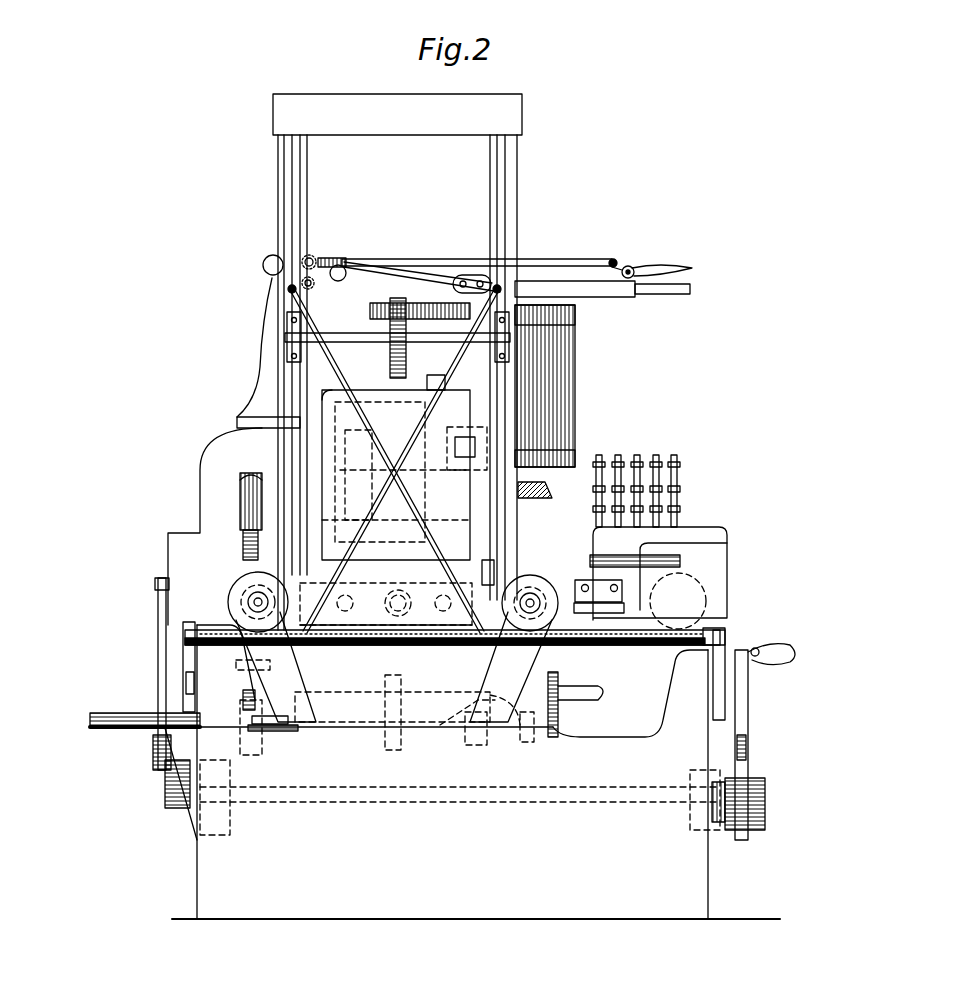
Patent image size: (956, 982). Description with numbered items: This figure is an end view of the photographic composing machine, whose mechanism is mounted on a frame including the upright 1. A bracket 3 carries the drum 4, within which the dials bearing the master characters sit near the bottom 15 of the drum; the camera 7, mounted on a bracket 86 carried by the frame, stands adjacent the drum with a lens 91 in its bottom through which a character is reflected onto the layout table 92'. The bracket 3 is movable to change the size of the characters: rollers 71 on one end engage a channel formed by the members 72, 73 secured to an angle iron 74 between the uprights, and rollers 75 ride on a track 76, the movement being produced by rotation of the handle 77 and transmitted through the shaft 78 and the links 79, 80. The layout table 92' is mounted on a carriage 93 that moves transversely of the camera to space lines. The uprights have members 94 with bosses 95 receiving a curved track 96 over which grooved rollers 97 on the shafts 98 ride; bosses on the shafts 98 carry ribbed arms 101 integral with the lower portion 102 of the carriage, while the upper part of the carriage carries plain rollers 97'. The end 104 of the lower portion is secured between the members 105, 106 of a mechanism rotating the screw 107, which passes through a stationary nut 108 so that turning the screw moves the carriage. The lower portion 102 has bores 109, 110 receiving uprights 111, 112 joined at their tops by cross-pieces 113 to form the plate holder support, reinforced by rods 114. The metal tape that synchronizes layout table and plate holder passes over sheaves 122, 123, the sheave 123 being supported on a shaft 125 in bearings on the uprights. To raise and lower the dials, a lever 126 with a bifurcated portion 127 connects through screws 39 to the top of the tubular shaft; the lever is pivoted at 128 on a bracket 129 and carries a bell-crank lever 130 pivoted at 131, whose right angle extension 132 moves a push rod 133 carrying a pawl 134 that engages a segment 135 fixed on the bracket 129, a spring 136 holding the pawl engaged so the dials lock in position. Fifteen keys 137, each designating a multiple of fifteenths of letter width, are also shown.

The upright 1 is at (446, 918).
The bracket 3 is at (200, 462).
The drum 4 is at (560, 377).
The camera 7 is at (411, 464).
The bottom of the drum 15 is at (578, 462).
The screws 39 is at (465, 278).
The rollers 71 is at (253, 659).
The channel member 72 is at (257, 690).
The channel member 73 is at (186, 690).
The angle iron 74 is at (202, 745).
The rollers 75 is at (252, 500).
The track 76 is at (246, 548).
The handle 77 is at (788, 662).
The shaft 78 is at (456, 803).
The link 79 is at (170, 770).
The link 80 is at (158, 690).
The bracket 86 is at (345, 388).
The lens 91 is at (477, 447).
The layout table 92' is at (510, 558).
The carriage 93 is at (386, 604).
The members 94 is at (190, 652).
The bosses 95 is at (726, 637).
The curved track 96 is at (632, 647).
The grooved or flanged rollers 97 is at (531, 590).
The plain rollers 97' is at (669, 578).
The shafts 98 is at (250, 594).
The ribbed arms 101 is at (305, 668).
The lower portion of the carriage 102 is at (416, 692).
The end of the lower portion of the carriage 104 is at (495, 745).
The member 105 is at (476, 748).
The member 106 is at (525, 746).
The screw 107 is at (106, 727).
The stationary nut 108 is at (250, 730).
The bore 109 is at (286, 732).
The bore 110 is at (470, 708).
The upright 111 is at (508, 214).
The upright 112 is at (283, 207).
The cross-pieces 113 is at (520, 120).
The rods or bars 114 is at (420, 530).
The sheave 122 is at (391, 752).
The sheave 123 is at (390, 356).
The shaft 125 is at (342, 328).
The lever 126 is at (598, 297).
The bifurcated portion 127 is at (470, 275).
The pivot 128 is at (263, 265).
The bracket 129 is at (262, 331).
The bell-crank lever 130 is at (672, 261).
The pivot 131 is at (630, 266).
The right angle extension 132 is at (609, 261).
The push rod 133 is at (548, 255).
The pawl 134 is at (312, 258).
The segment 135 is at (312, 286).
The spring 136 is at (346, 262).
The keys 137 is at (625, 458).